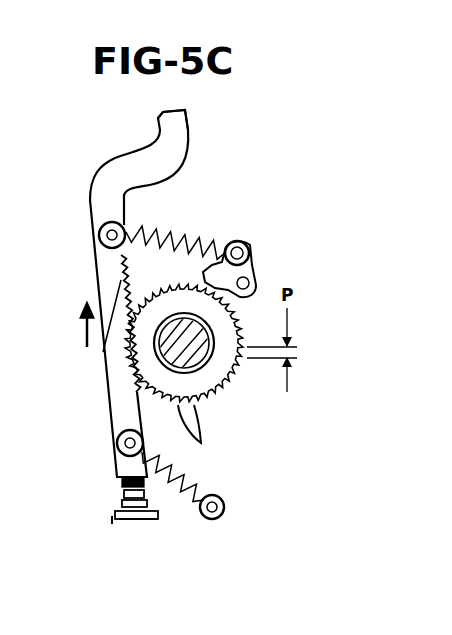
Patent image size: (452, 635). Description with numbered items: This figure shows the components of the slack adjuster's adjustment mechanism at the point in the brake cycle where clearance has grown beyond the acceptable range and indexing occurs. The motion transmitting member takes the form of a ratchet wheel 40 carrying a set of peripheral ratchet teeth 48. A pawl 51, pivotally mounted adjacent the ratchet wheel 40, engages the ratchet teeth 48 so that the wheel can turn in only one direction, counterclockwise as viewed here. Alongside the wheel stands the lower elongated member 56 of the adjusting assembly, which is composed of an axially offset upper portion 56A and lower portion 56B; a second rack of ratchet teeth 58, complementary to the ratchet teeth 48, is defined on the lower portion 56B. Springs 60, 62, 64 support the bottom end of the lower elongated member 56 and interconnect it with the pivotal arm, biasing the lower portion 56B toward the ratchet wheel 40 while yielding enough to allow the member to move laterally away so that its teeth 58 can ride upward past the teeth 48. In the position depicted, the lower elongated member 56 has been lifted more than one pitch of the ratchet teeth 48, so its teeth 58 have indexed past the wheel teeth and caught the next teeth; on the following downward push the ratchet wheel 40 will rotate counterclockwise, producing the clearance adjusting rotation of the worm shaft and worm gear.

The ratchet wheel 40 is at (222, 403).
The ratchet teeth 48 is at (201, 443).
The pawl 51 is at (257, 263).
The lower elongated member 56 is at (105, 280).
The upper portion 56A is at (166, 112).
The lower portion 56B is at (100, 267).
The ratchet teeth 58 is at (103, 350).
The spring 60 is at (185, 235).
The spring 62 is at (118, 505).
The spring 64 is at (178, 512).